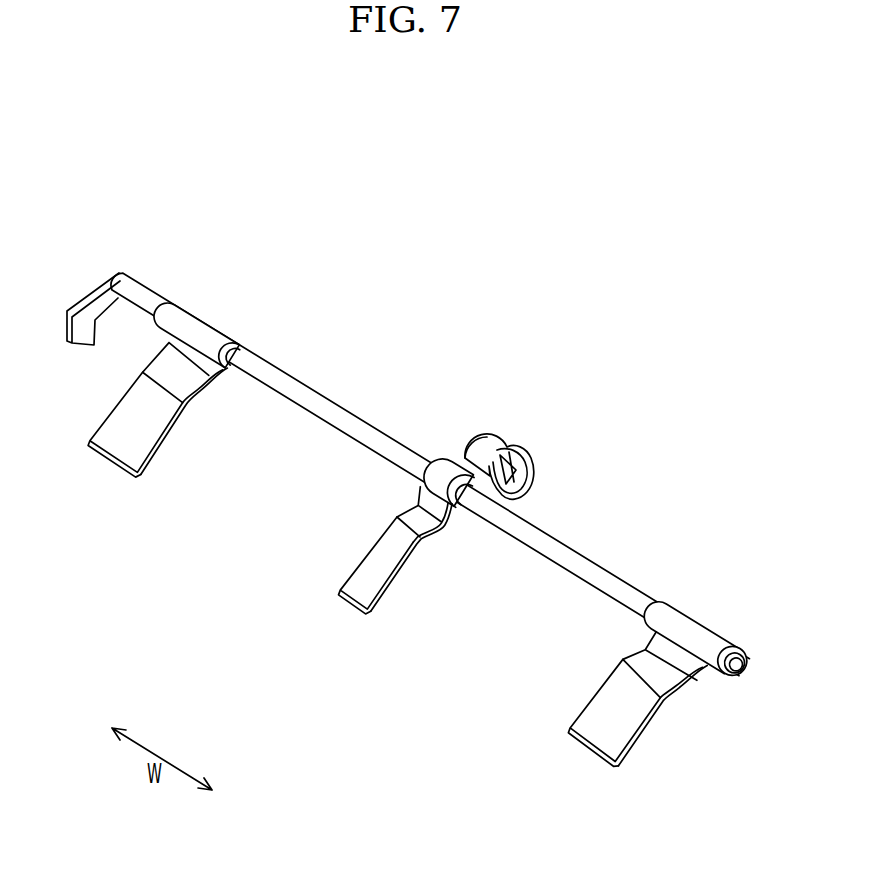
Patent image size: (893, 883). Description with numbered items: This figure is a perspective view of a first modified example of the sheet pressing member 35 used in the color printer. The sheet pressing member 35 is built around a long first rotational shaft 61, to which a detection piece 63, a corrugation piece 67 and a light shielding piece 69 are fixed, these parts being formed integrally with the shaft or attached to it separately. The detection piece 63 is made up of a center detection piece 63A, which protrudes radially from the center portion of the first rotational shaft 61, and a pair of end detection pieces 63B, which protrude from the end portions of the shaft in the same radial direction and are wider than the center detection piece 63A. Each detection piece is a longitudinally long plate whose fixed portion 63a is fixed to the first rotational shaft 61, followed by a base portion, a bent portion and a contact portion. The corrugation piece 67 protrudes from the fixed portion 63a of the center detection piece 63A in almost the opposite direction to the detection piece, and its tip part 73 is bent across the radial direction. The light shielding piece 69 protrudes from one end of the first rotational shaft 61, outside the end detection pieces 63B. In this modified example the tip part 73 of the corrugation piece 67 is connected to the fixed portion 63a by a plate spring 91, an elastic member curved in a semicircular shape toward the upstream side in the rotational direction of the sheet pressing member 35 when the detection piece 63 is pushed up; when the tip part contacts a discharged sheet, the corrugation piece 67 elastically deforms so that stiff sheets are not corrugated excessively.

The sheet pressing member 35 is at (399, 512).
The first rotational shaft 61 is at (328, 420).
The light shielding piece 69 is at (79, 343).
The detection piece 63 is at (414, 548).
The center detection piece 63A is at (383, 565).
The end detection piece 63B is at (132, 440).
The fixed portion 63a is at (428, 474).
The corrugation piece 67 is at (517, 431).
The plate spring 91 is at (477, 442).
The tip part 73 is at (535, 473).